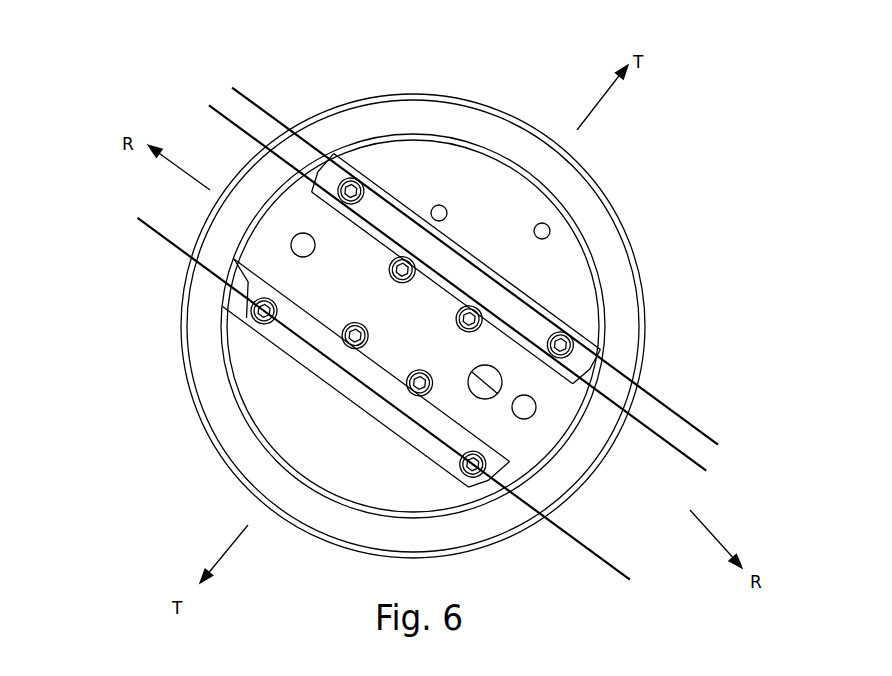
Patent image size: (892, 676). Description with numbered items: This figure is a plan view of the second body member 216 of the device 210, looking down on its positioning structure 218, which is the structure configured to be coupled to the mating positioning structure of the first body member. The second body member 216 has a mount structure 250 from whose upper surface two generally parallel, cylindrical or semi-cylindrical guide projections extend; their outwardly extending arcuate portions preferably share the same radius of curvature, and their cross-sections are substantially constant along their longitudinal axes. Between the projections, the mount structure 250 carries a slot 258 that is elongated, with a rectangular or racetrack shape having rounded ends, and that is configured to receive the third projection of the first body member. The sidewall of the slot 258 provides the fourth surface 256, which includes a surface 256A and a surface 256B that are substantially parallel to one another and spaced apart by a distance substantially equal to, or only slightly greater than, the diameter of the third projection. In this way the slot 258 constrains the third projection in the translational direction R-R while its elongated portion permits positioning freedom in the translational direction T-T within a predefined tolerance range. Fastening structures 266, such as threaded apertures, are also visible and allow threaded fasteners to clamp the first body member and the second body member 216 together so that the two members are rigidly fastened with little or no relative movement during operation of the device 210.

The device 210 is at (433, 326).
The second body member 216 is at (628, 319).
The positioning structure 218 is at (692, 247).
The mount structure 250 is at (267, 393).
The fourth surface 256 is at (516, 396).
The surface 256A is at (487, 366).
The surface 256B is at (478, 369).
The slot 258 is at (535, 412).
The fastening structures 266 is at (292, 240).